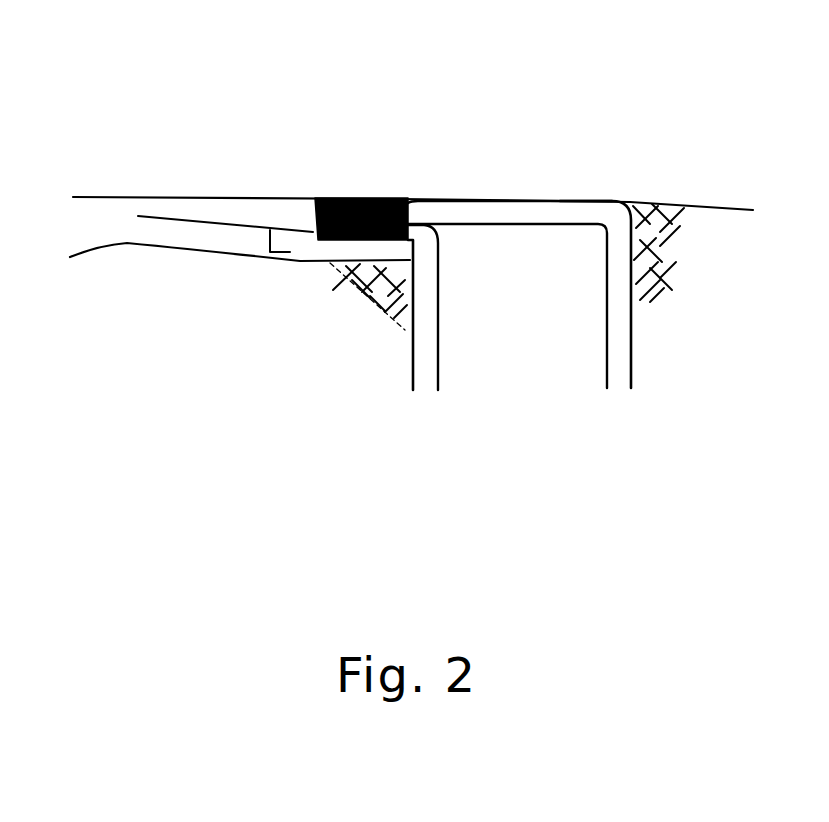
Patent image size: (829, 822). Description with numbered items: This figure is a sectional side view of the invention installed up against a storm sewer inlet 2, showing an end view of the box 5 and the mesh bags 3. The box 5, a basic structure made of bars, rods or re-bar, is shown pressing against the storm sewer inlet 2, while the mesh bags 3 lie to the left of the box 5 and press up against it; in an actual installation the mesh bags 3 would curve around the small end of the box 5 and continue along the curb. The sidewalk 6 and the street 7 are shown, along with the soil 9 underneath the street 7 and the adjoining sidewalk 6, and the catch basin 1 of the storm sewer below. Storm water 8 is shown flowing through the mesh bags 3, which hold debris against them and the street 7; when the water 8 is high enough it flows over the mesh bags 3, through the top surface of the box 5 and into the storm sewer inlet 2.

The catch basin 1 is at (563, 383).
The storm sewer inlet 2 is at (426, 227).
The mesh bags 3 is at (317, 237).
The box 5 is at (393, 201).
The side walk 6 is at (593, 207).
The street 7 is at (219, 260).
The water 8 is at (228, 213).
The soil 9 is at (353, 333).